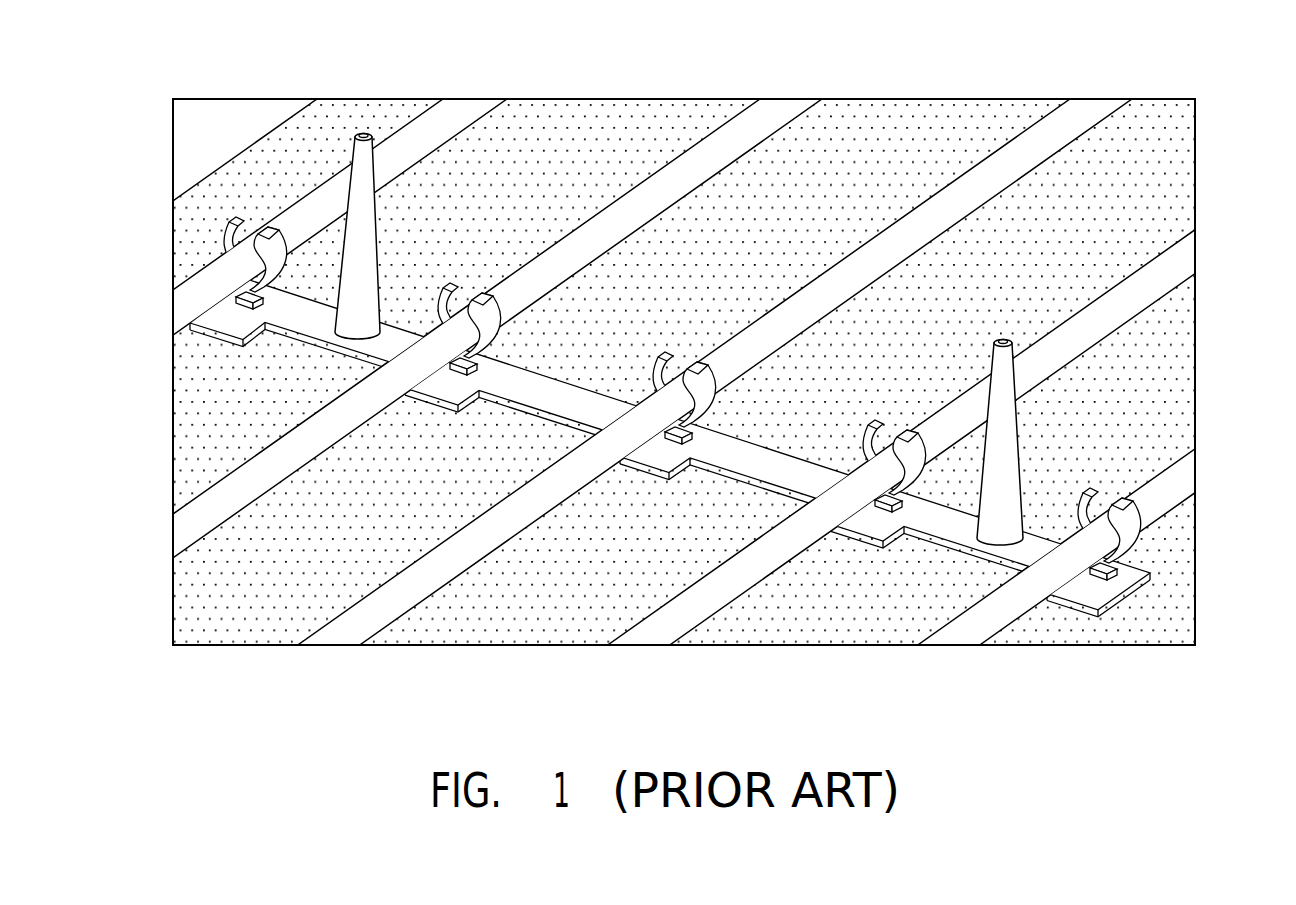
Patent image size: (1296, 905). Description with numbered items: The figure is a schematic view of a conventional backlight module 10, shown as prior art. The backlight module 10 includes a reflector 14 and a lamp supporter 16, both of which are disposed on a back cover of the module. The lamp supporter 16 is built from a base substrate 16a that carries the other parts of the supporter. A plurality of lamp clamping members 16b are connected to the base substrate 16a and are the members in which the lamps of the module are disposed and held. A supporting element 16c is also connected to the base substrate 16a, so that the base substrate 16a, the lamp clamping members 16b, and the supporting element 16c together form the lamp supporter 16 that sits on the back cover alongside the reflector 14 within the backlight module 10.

The backlight module 10 is at (1283, 728).
The reflector 14 is at (1187, 258).
The lamp supporter 16 is at (585, 375).
The base substrate 16a is at (510, 383).
The lamp clamping members 16b is at (440, 304).
The supporting element 16c is at (360, 269).